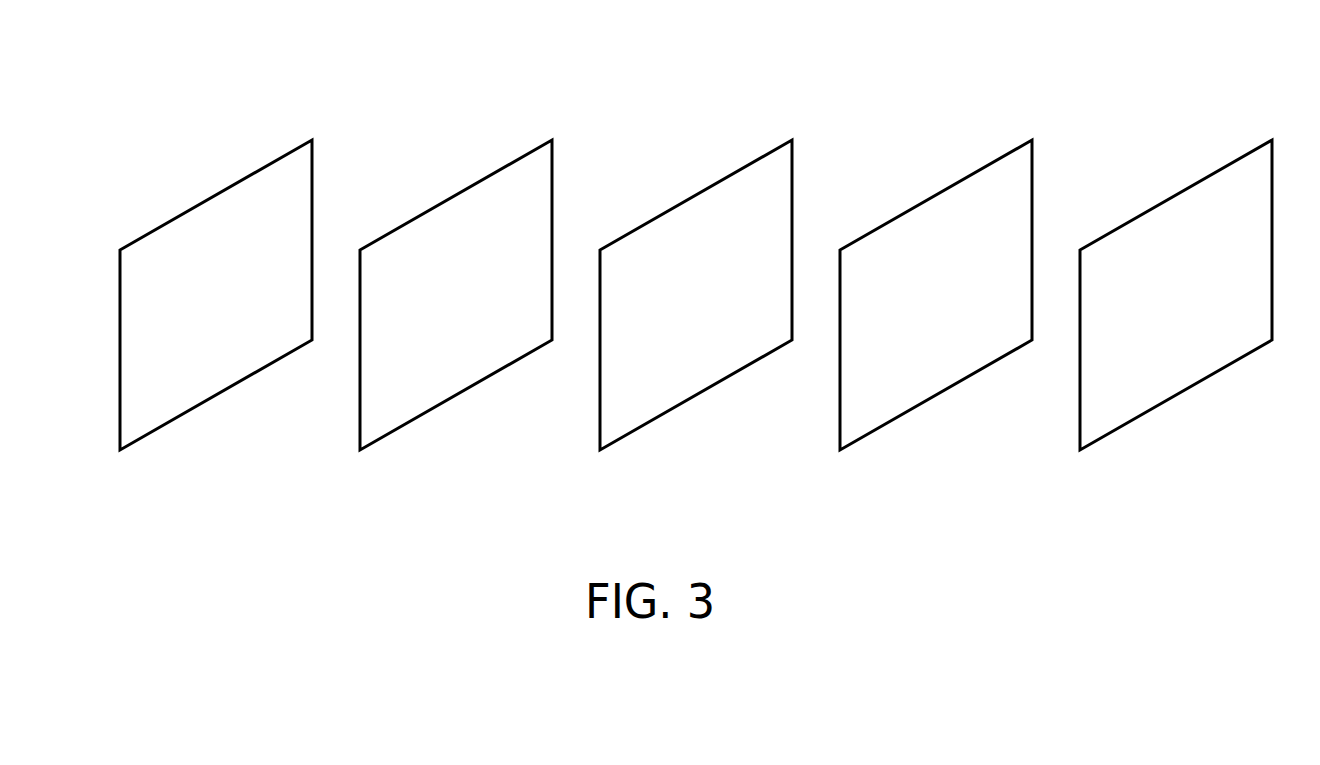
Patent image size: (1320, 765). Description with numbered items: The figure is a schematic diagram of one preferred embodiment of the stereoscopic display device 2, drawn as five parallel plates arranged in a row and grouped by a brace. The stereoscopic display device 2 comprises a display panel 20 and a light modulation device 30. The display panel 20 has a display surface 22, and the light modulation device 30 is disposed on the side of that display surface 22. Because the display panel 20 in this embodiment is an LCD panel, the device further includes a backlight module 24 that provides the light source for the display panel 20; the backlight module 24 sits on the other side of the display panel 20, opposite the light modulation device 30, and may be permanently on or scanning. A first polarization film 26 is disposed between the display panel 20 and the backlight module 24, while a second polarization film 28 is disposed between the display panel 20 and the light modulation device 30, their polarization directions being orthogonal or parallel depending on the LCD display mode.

The stereoscopic display device 2 is at (218, 87).
The display panel 20 is at (748, 164).
The display surface 22 is at (767, 240).
The backlight module 24 is at (270, 164).
The first polarization film 26 is at (510, 164).
The second polarization film 28 is at (989, 164).
The light modulation device 30 is at (1229, 164).